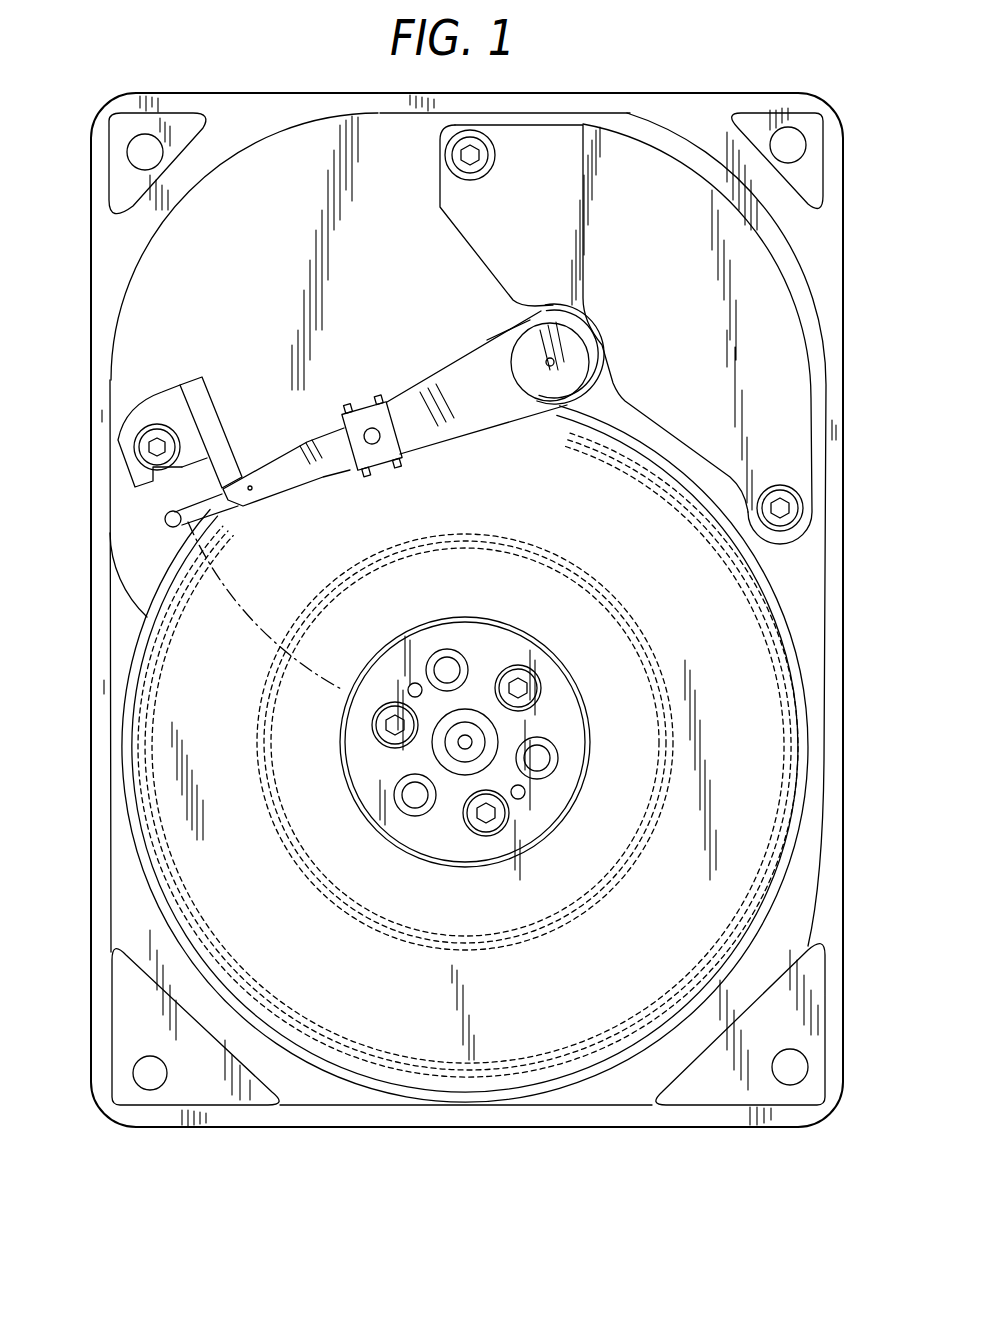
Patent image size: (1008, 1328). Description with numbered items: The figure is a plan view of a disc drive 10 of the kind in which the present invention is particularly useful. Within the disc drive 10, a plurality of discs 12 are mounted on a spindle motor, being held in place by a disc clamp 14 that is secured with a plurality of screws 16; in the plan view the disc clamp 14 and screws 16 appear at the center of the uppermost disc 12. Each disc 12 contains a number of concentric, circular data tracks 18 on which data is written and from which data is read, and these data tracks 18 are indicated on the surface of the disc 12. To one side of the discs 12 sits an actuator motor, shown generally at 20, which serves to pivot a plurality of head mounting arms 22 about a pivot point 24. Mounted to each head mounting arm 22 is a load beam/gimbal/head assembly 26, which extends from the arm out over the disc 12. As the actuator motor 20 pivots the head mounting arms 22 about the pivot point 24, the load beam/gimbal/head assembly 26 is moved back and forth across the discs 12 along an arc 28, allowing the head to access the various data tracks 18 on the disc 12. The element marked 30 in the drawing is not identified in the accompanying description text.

The disc drive 10 is at (864, 573).
The disc 12 is at (538, 995).
The disc clamp 14 is at (596, 677).
The screws 16 is at (482, 837).
The data tracks 18 is at (340, 913).
The actuator motor 20 is at (820, 372).
The head mounting arms 22 is at (408, 388).
The pivot point 24 is at (548, 362).
The load beam/gimbal/head assembly 26 is at (165, 516).
The arc 28 is at (238, 612).
The latch 30 is at (232, 452).